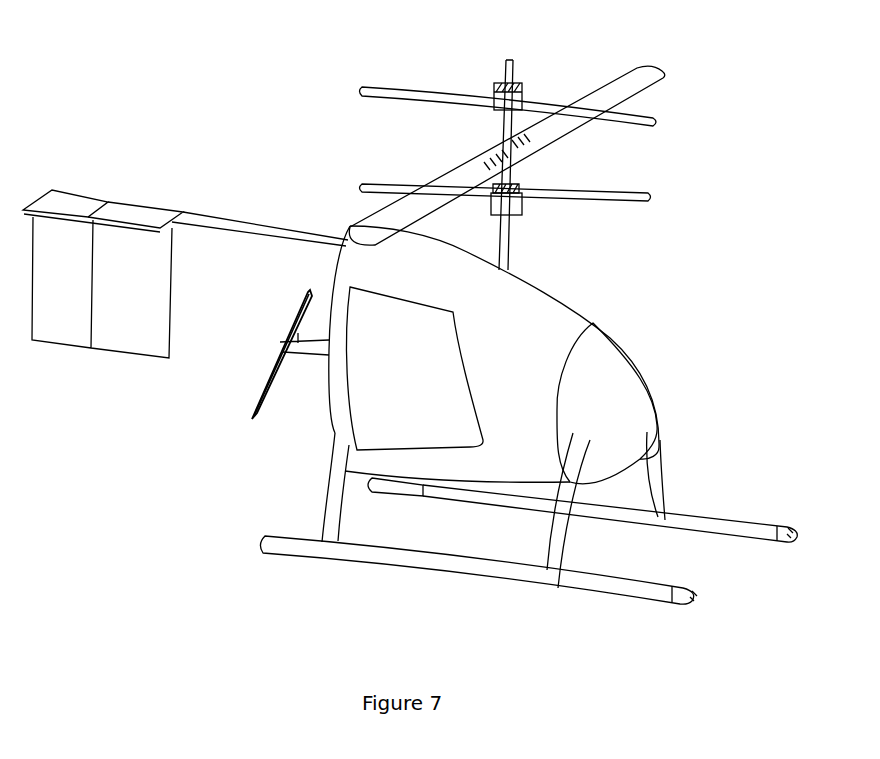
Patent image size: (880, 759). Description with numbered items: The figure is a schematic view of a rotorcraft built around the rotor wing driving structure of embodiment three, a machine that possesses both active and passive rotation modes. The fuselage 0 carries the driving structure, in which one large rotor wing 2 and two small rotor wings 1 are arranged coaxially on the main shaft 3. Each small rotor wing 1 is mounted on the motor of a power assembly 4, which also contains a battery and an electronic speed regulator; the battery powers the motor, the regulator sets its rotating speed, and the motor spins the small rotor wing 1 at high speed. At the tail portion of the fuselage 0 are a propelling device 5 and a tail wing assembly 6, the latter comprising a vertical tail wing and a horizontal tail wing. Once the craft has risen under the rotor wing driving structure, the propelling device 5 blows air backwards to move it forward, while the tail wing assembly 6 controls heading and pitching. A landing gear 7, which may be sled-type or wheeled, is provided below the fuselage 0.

The fuselage 0 is at (615, 387).
The small rotor wing 1 is at (395, 88).
The large rotor wing 2 is at (625, 77).
The main shaft 3 is at (508, 60).
The power assembly 4 is at (521, 90).
The propelling device 5 is at (256, 402).
The tail wing assembly 6 is at (65, 335).
The landing gear 7 is at (422, 562).